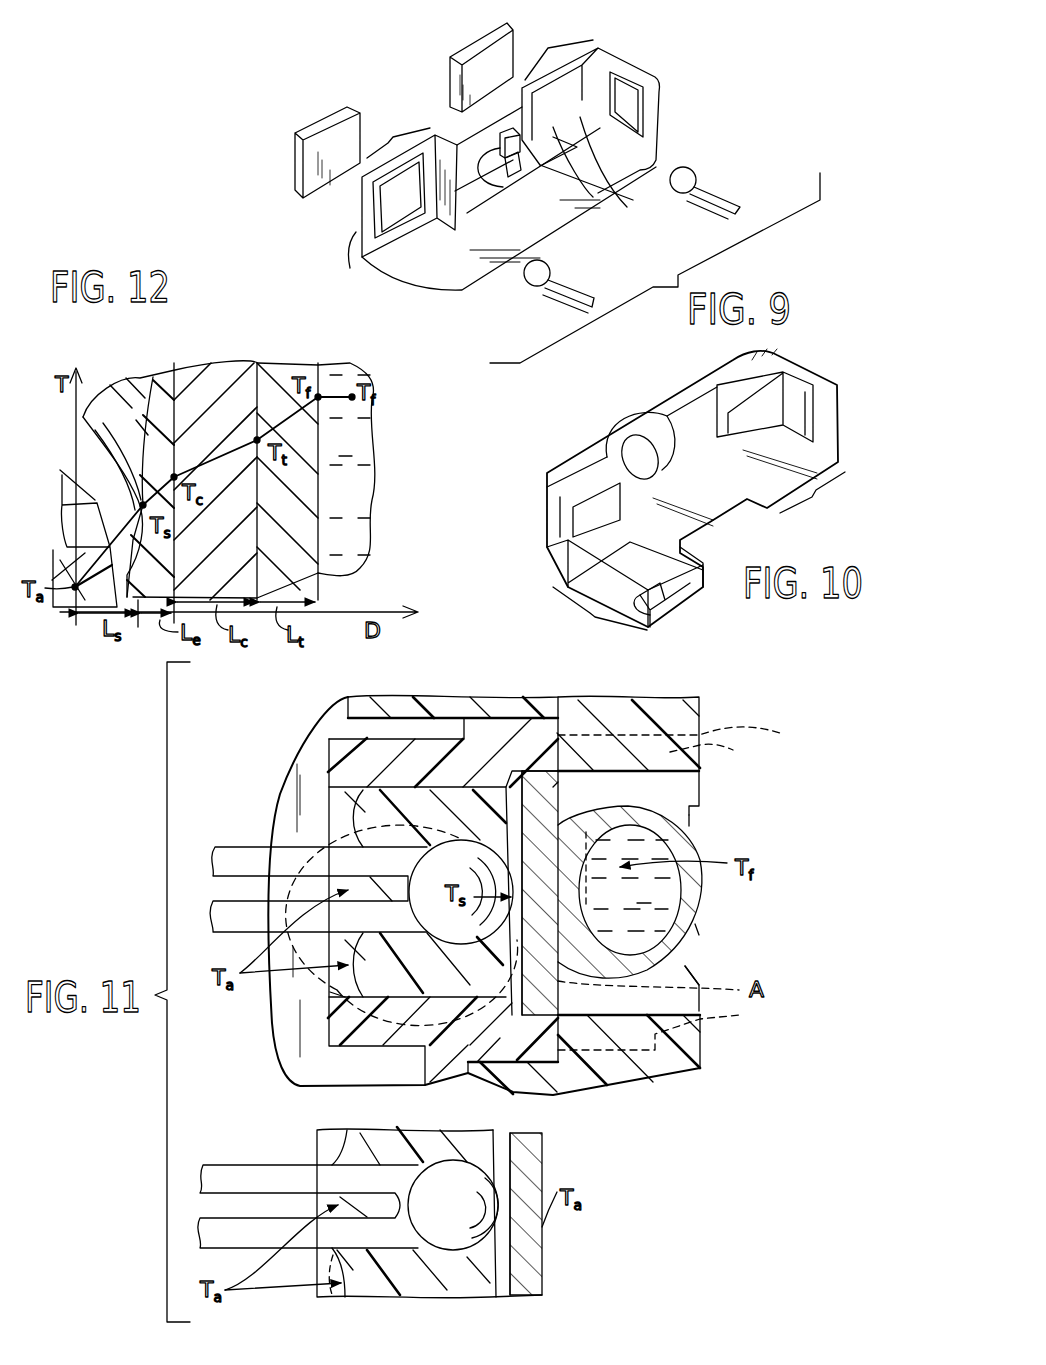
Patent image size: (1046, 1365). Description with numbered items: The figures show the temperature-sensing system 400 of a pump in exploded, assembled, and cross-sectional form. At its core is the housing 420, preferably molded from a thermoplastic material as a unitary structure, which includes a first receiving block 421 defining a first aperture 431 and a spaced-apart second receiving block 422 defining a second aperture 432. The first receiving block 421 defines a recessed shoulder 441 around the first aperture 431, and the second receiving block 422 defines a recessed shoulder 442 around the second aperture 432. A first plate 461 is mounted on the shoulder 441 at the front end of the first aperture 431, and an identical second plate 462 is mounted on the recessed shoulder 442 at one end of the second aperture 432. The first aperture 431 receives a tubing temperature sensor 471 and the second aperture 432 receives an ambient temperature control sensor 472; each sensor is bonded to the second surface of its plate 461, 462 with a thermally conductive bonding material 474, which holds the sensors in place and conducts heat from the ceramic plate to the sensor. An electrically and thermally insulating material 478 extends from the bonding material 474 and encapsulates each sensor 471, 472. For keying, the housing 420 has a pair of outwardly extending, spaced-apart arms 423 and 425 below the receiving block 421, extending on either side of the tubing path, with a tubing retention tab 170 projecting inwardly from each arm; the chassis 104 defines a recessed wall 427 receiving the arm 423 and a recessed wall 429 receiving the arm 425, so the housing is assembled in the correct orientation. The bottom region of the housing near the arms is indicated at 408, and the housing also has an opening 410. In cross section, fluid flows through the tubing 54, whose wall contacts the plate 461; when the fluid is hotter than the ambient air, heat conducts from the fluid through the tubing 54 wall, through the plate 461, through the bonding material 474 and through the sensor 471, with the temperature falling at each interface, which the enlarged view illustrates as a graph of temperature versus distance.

In FIG. 12, the tubing 54 is at (282, 370).
In FIG. 11, the tubing 54 is at (681, 846).
In FIG. 11, the chassis 104 is at (706, 718).
In FIG. 9, the tubing retention tab 170 is at (573, 123).
In FIG. 10, the tubing retention tab 170 is at (660, 614).
In FIG. 11, the tubing retention tab 170 is at (689, 813).
In FIG. 11, the temperature-sensing system 400 is at (288, 1103).
In FIG. 9, the body bottom surface 408 is at (477, 207).
In FIG. 10, the hole 410 is at (643, 450).
In FIG. 9, the housing 420 is at (449, 298).
In FIG. 10, the housing 420 is at (570, 451).
In FIG. 11, the housing 420 is at (326, 728).
In FIG. 9, the first receiving block 421 is at (559, 52).
In FIG. 10, the first receiving block 421 is at (598, 612).
In FIG. 9, the second receiving block 422 is at (384, 183).
In FIG. 10, the second receiving block 422 is at (818, 499).
In FIG. 9, the arm 423 is at (573, 120).
In FIG. 10, the arm 423 is at (650, 628).
In FIG. 11, the arm 423 is at (721, 750).
In FIG. 9, the arm 425 is at (514, 160).
In FIG. 10, the arm 425 is at (692, 562).
In FIG. 11, the arm 425 is at (686, 970).
In FIG. 11, the recessed wall 427 is at (688, 731).
In FIG. 11, the recessed wall 429 is at (665, 1028).
In FIG. 9, the first aperture 431 is at (577, 98).
In FIG. 10, the first aperture 431 is at (598, 517).
In FIG. 9, the second aperture 432 is at (405, 187).
In FIG. 10, the second aperture 432 is at (757, 407).
In FIG. 9, the recessed shoulder 441 is at (597, 55).
In FIG. 9, the recessed shoulder 442 is at (360, 266).
In FIG. 9, the first plate 461 is at (473, 47).
In FIG. 12, the first plate 461 is at (220, 372).
In FIG. 11, the first plate 461 is at (499, 832).
In FIG. 9, the second plate 462 is at (331, 130).
In FIG. 11, the second plate 462 is at (523, 1253).
In FIG. 9, the tubing temperature sensor 471 is at (688, 178).
In FIG. 12, the tubing temperature sensor 471 is at (90, 440).
In FIG. 11, the tubing temperature sensor 471 is at (422, 863).
In FIG. 9, the ambient temperature control sensor 472 is at (532, 282).
In FIG. 11, the ambient temperature control sensor 472 is at (424, 1217).
In FIG. 12, the thermally conductive bonding material 474 is at (166, 378).
In FIG. 11, the thermally conductive bonding material 474 is at (521, 825).
In FIG. 12, the electrically and thermally insulating material 478 is at (113, 390).
In FIG. 11, the electrically and thermally insulating material 478 is at (387, 825).